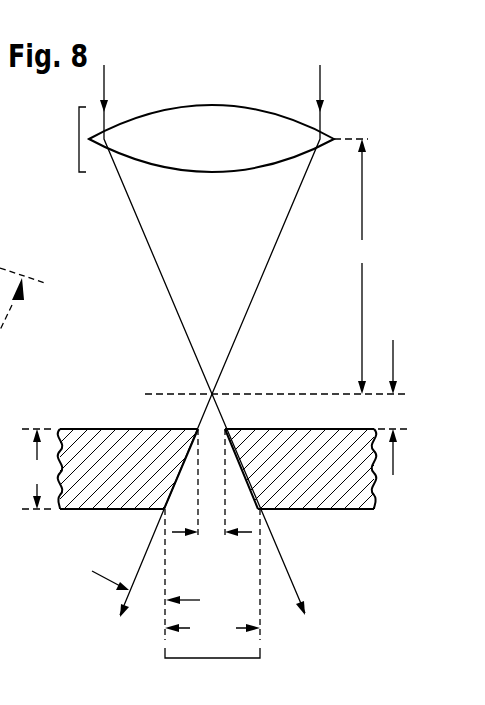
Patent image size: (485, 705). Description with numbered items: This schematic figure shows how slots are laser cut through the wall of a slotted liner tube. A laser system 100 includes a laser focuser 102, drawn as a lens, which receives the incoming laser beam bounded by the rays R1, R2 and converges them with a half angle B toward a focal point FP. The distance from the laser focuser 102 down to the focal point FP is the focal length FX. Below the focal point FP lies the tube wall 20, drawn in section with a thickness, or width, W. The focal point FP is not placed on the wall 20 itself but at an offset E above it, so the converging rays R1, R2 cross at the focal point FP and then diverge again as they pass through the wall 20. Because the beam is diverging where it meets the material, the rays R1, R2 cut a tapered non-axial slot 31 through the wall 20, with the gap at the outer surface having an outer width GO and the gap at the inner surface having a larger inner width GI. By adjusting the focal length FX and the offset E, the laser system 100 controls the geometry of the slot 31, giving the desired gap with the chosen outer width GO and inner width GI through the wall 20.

The laser system 100 is at (79, 139).
The laser focuser 102 is at (217, 108).
The tube wall 20 is at (98, 500).
The non-axial slot 31 is at (215, 658).
The laser beam edge ray R1 is at (104, 82).
The laser beam edge ray R2 is at (320, 82).
The focal point FP is at (197, 394).
The focal length FX is at (352, 266).
The offset E is at (394, 407).
The wall width W is at (38, 469).
The outer width GO is at (212, 485).
The inner width GI is at (212, 574).
The half angle B is at (146, 588).